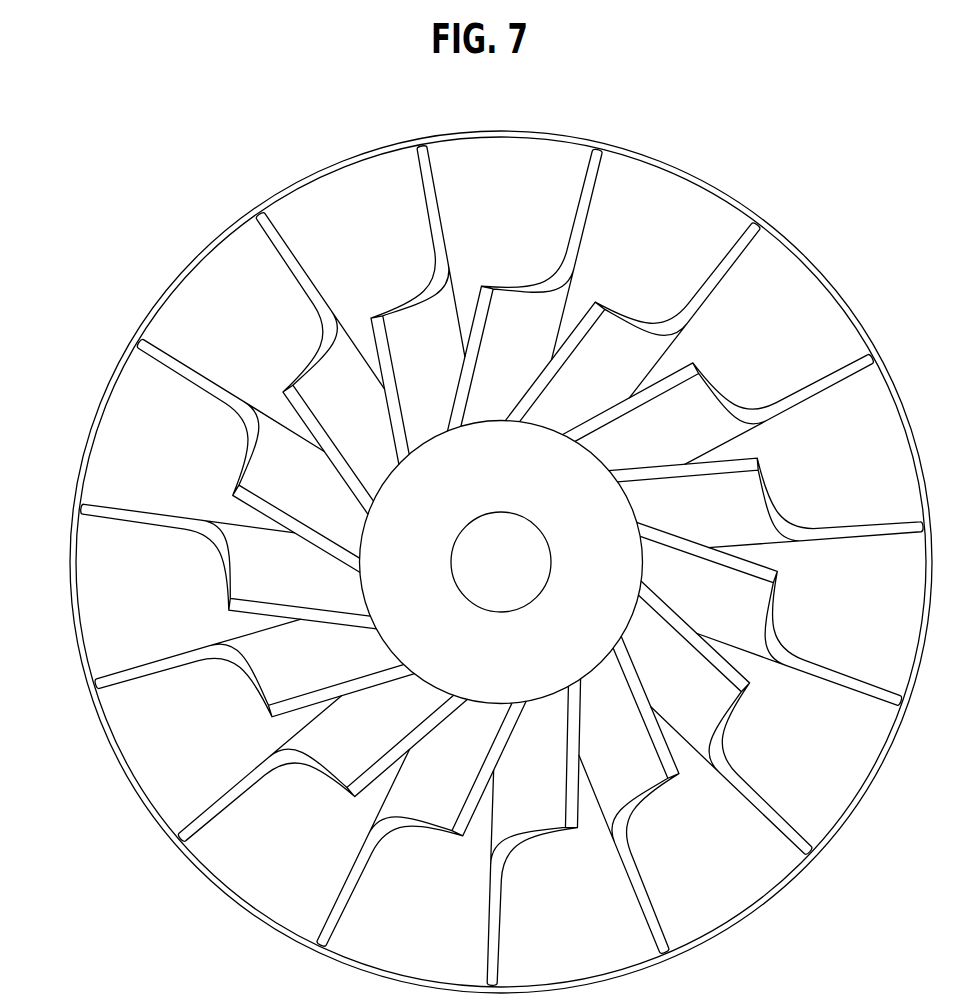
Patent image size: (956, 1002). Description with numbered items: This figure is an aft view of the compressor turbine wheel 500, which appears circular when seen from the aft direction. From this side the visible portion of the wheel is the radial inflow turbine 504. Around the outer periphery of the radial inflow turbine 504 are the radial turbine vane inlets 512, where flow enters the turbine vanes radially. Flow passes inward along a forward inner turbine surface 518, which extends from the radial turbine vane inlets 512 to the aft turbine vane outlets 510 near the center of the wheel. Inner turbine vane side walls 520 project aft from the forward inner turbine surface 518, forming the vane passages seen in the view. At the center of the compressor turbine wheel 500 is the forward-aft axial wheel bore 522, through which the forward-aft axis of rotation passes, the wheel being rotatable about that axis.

The compressor turbine wheel 500 is at (766, 132).
The radial inflow turbine 504 is at (810, 317).
The aft turbine vane outlets 510 is at (360, 540).
The radial turbine vane inlets 512 is at (180, 275).
The forward inner turbine surface 518 is at (380, 246).
The inner turbine vane side walls 520 is at (357, 413).
The forward-aft axial wheel bore 522 is at (466, 583).